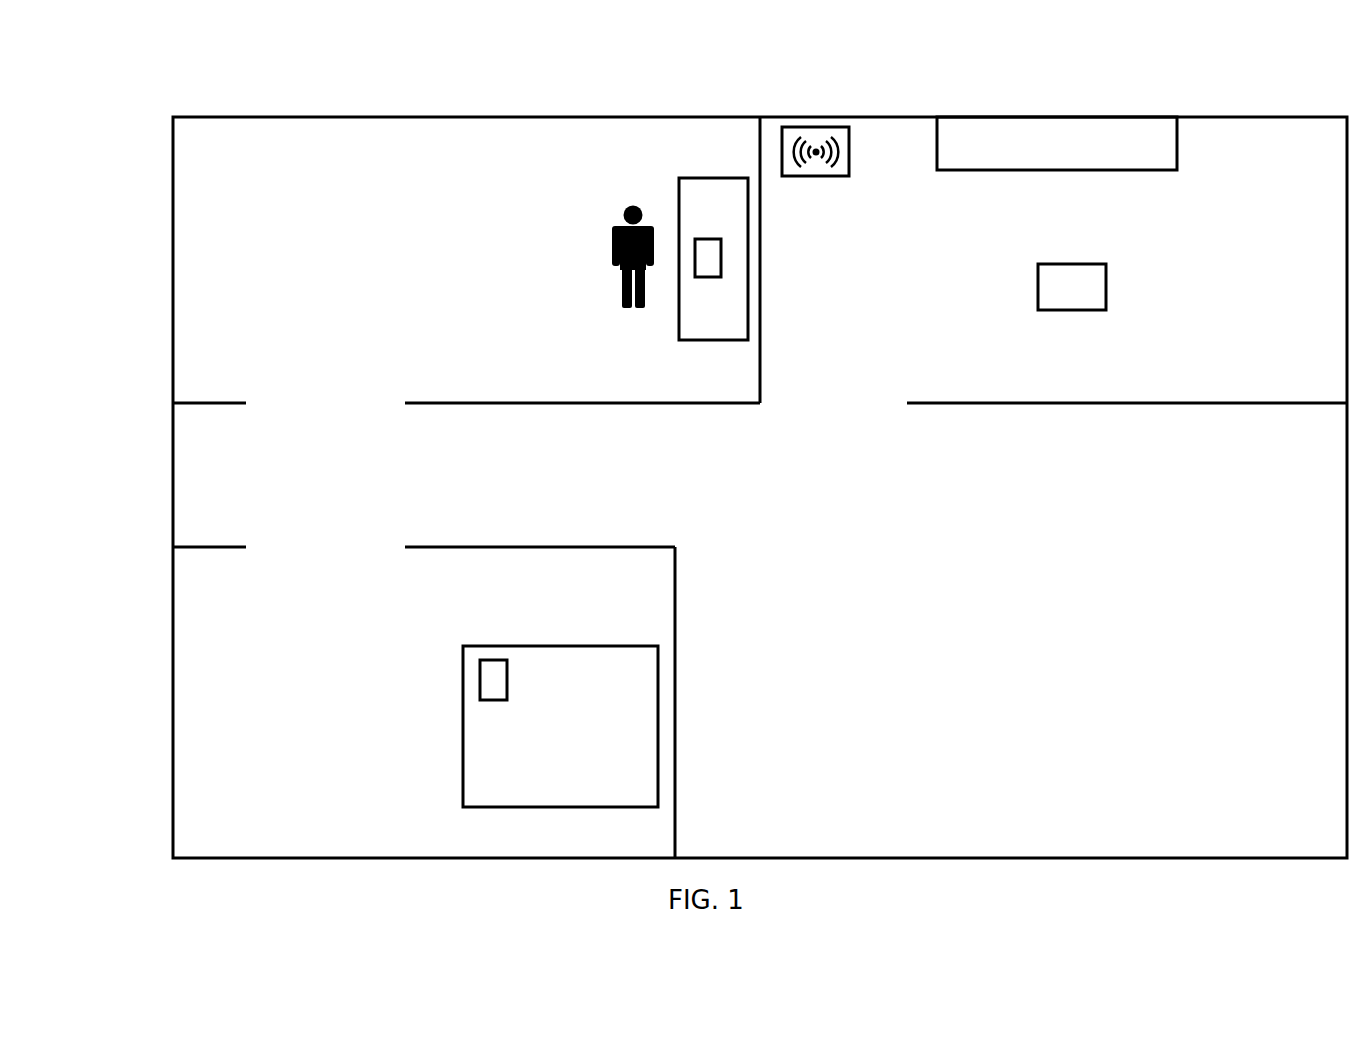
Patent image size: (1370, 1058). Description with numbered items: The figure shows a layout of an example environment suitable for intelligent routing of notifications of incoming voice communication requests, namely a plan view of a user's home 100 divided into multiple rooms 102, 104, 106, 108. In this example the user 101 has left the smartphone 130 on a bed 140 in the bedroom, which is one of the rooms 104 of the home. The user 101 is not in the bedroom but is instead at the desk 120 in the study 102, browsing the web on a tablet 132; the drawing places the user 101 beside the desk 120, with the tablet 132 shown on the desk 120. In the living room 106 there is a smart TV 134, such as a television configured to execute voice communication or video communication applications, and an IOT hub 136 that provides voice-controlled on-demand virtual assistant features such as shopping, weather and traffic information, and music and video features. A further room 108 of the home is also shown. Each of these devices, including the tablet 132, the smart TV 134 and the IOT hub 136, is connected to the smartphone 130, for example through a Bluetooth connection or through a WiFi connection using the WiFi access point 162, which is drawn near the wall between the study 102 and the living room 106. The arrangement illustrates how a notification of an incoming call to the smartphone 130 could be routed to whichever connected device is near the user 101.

The user's home 100 is at (140, 114).
The user 101 is at (610, 259).
The study 102 is at (458, 257).
The room 104 is at (405, 722).
The living room 106 is at (1159, 343).
The room 108 is at (1052, 663).
The desk 120 is at (679, 320).
The smartphone 130 is at (493, 660).
The tablet 132 is at (721, 257).
The smart TV 134 is at (1097, 155).
The IOT hub 136 is at (1090, 300).
The bed 140 is at (577, 753).
The WiFi access point 162 is at (816, 178).